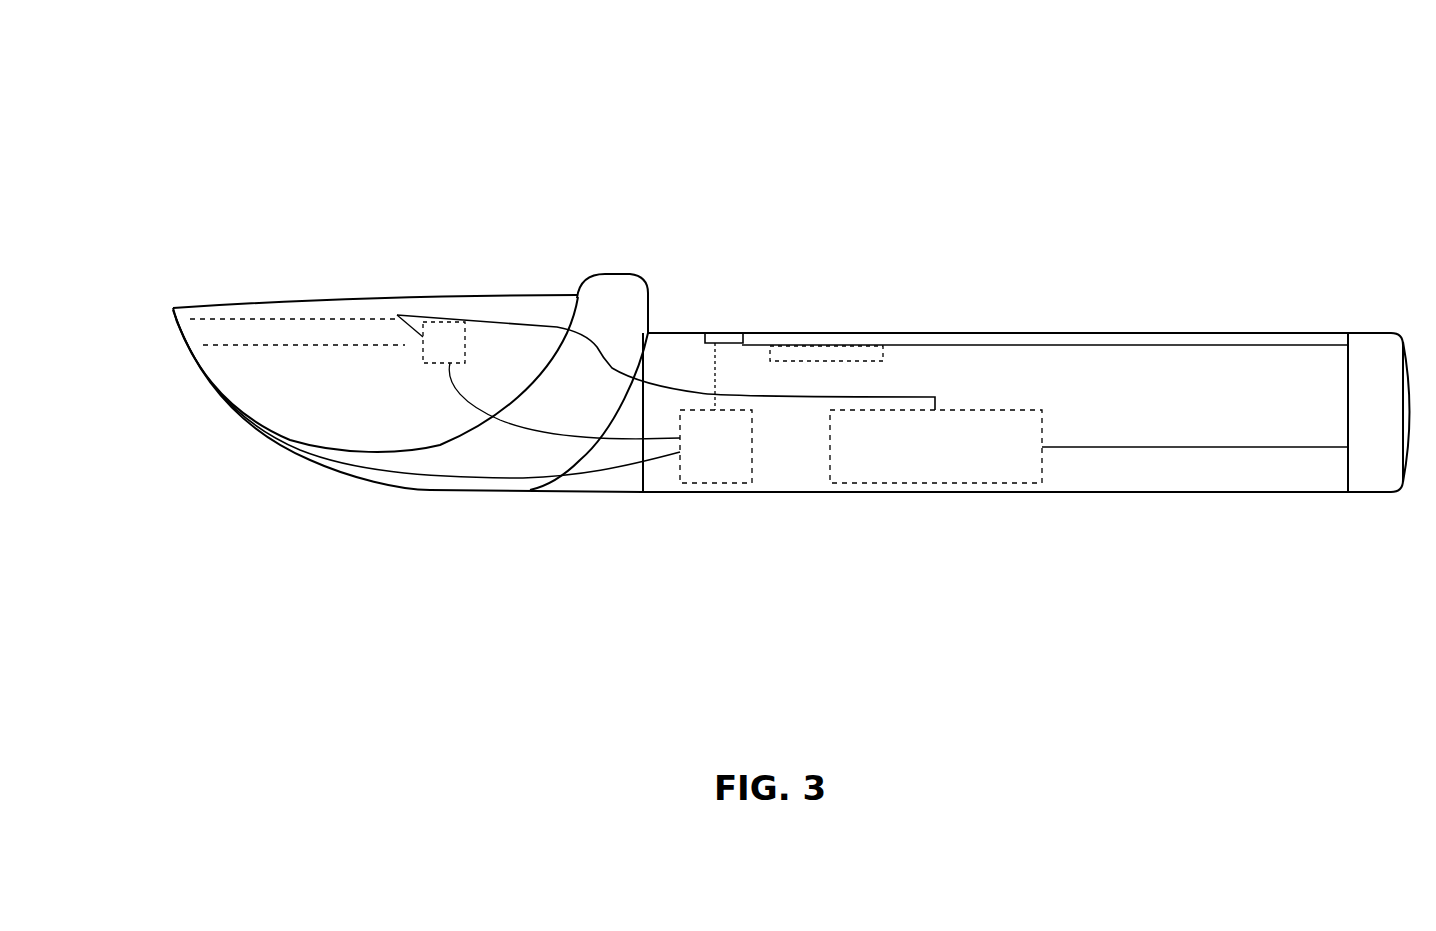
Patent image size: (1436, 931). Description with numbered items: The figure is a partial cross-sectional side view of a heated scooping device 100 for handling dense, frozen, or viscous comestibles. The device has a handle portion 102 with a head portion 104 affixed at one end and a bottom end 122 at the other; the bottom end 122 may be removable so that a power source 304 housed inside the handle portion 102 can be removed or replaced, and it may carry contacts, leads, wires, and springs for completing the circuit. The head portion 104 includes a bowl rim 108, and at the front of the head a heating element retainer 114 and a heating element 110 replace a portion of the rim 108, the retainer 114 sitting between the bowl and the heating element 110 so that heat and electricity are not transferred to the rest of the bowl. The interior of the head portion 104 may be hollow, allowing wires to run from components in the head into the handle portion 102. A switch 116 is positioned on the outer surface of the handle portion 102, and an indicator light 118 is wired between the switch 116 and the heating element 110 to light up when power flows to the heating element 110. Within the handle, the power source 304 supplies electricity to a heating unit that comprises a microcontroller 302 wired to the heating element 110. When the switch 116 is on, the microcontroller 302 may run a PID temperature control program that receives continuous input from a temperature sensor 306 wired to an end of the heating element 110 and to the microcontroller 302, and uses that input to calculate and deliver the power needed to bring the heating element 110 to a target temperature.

The heated scooping device 100 is at (1150, 158).
The handle portion 102 is at (1195, 493).
The head portion 104 is at (385, 490).
The bowl rim 108 is at (173, 320).
The heating element 110 is at (302, 315).
The heating element retainer 114 is at (260, 340).
The switch 116 is at (808, 345).
The indicator light 118 is at (713, 338).
The bottom end 122 is at (1363, 357).
The microcontroller 302 is at (706, 458).
The power source 304 is at (925, 457).
The temperature sensor 306 is at (440, 333).